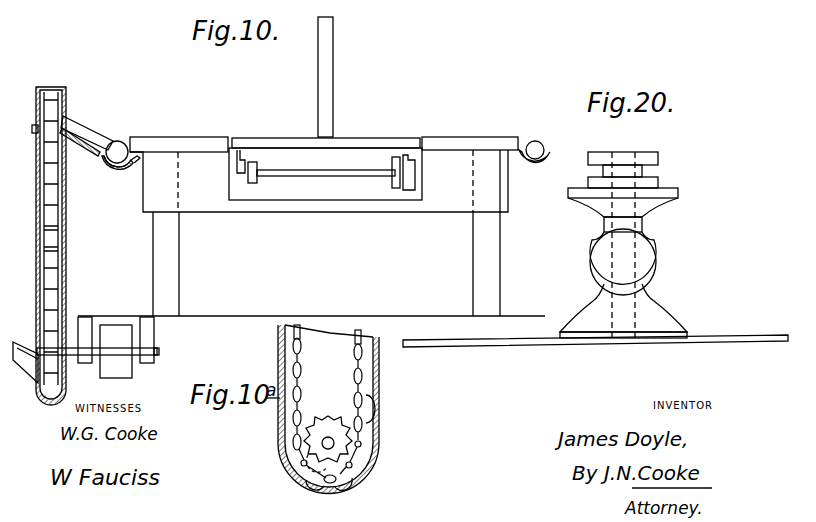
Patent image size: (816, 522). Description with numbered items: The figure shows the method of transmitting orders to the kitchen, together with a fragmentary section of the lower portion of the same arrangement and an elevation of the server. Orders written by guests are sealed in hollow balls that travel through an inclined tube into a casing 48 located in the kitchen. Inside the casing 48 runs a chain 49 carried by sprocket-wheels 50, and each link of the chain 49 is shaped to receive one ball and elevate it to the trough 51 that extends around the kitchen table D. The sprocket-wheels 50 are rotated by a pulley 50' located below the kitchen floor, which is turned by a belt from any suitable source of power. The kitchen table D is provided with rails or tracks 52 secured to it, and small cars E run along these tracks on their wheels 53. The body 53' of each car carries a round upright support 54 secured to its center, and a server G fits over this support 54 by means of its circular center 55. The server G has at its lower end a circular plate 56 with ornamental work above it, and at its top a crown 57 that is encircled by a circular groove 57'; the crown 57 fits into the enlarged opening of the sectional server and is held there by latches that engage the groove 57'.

In FIG. 10, the casing 48 is at (37, 222).
In FIG. 10A, the casing 48 is at (280, 375).
In FIG. 10, the chain 49 is at (63, 253).
In FIG. 10A, the chain 49 is at (372, 367).
In FIG. 10A, the sprocket-wheels 50 is at (327, 407).
In FIG. 10, the pulley 50' is at (98, 354).
In FIG. 10, the trough 51 is at (118, 164).
In FIG. 10, the rails or tracks 52 is at (262, 178).
In FIG. 10, the wheels 53 is at (260, 166).
In FIG. 10, the body 53' is at (374, 170).
In FIG. 10, the round upright support 54 is at (333, 55).
In FIG. 20, the circular center 55 is at (618, 307).
In FIG. 20, the plate 56 is at (502, 346).
In FIG. 20, the crown 57 is at (629, 150).
In FIG. 20, the circular groove 57' is at (645, 168).
In FIG. 10, the small cars E is at (376, 139).
In FIG. 10, the kitchen table D is at (485, 138).
In FIG. 20, the server G is at (592, 252).